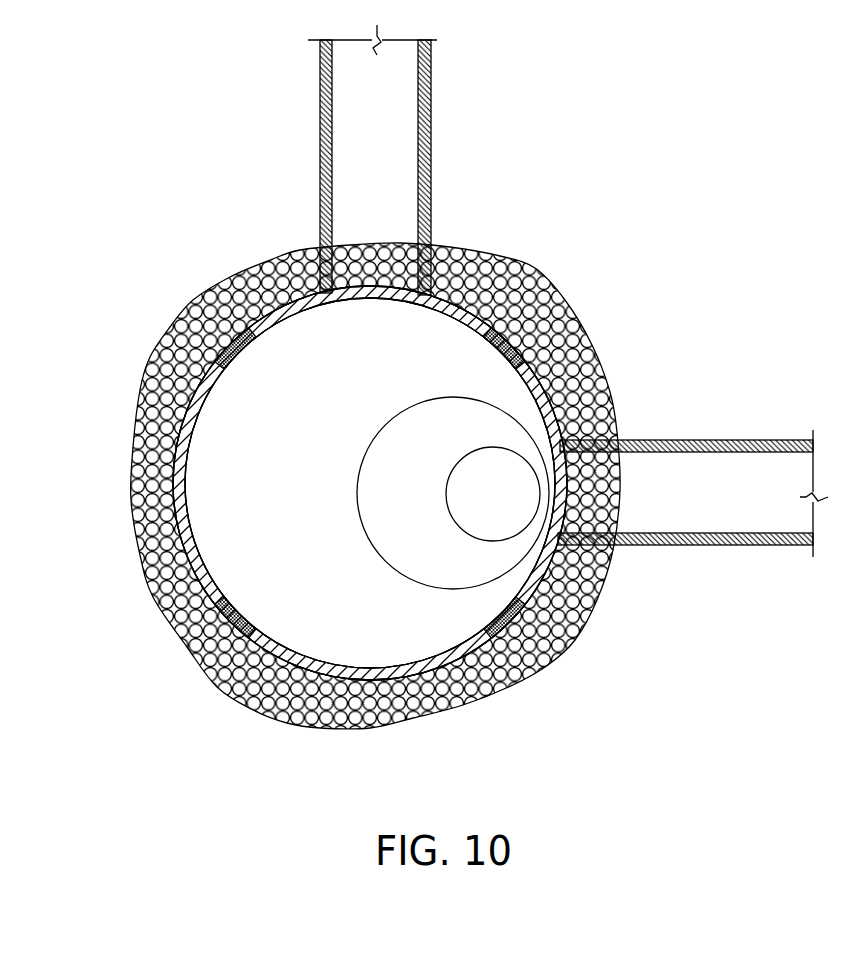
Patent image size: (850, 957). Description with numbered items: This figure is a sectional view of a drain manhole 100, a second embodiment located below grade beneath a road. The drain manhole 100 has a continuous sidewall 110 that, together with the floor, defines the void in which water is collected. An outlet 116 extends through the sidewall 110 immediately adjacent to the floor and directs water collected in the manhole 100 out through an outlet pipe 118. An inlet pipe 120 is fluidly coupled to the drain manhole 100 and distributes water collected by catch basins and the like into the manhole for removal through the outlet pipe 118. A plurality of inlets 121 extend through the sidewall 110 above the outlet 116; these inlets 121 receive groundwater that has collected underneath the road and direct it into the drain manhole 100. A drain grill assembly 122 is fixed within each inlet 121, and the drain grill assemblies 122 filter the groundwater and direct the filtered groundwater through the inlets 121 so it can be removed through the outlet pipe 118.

The drain manhole 100 is at (130, 684).
The continuous sidewall 110 is at (297, 307).
The outlet 116 is at (513, 504).
The outlet pipe 118 is at (727, 546).
The inlet pipe 120 is at (458, 93).
The inlets 121 is at (242, 384).
The drain grill assembly 122 is at (249, 351).